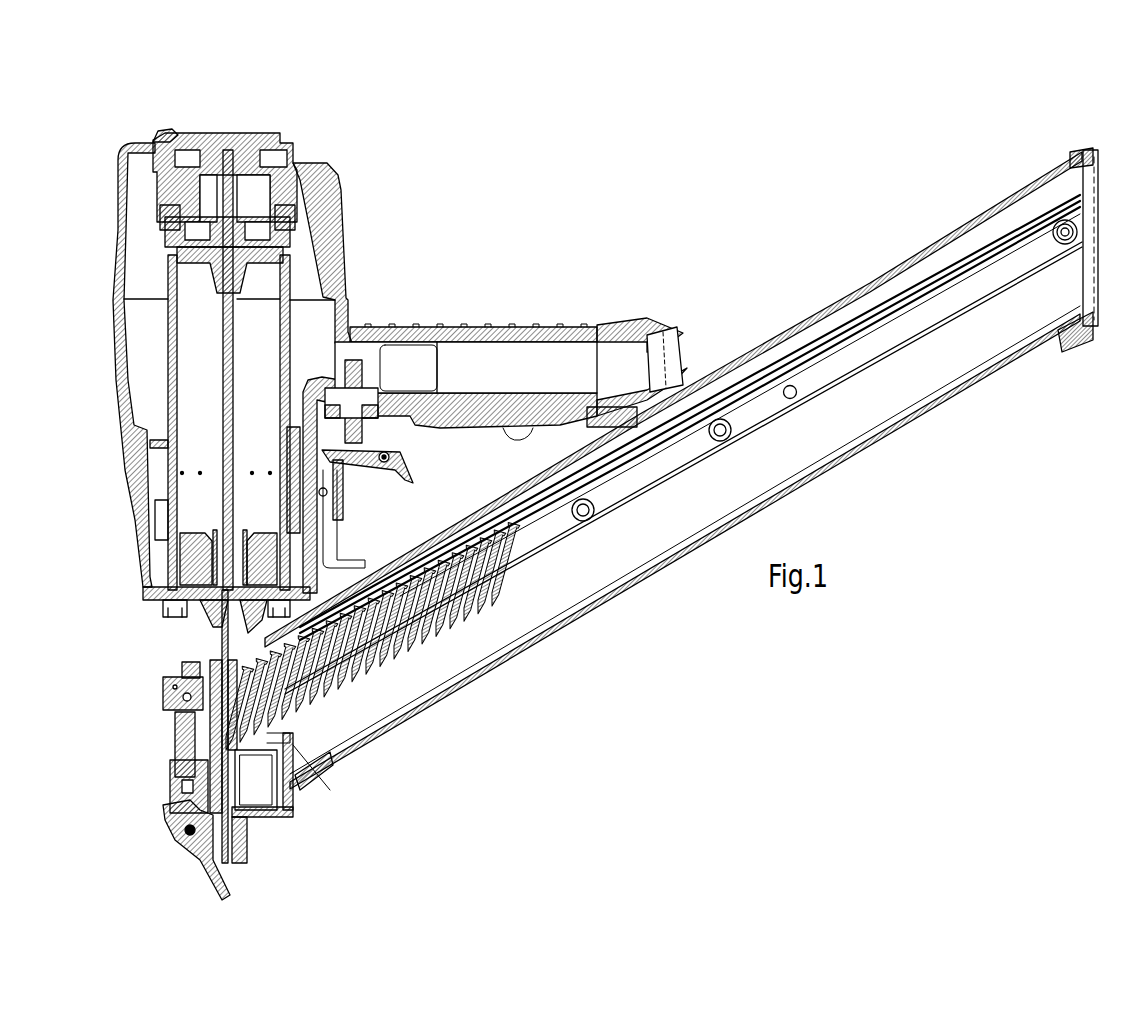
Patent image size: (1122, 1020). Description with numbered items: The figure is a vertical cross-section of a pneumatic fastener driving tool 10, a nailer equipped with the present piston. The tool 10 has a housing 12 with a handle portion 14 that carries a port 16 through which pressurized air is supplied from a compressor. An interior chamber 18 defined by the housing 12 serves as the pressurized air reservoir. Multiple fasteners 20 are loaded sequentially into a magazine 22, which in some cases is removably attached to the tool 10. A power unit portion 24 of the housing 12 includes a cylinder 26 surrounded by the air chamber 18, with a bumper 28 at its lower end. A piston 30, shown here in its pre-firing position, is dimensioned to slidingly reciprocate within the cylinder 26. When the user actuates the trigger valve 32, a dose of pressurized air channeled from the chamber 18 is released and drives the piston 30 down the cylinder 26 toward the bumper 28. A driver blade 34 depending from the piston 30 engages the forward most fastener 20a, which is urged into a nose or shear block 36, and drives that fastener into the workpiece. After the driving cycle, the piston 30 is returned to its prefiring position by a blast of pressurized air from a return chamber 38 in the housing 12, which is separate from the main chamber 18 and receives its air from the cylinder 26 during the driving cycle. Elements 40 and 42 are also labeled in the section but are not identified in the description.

The fastener driving tool 10 is at (480, 243).
The housing 12 is at (348, 318).
The handle portion 14 is at (598, 322).
The port 16 is at (670, 360).
The interior chamber 18 is at (147, 337).
The fasteners 20 is at (393, 652).
The forward most fastener 20a is at (165, 711).
The magazine 22 is at (550, 603).
The power unit portion 24 is at (110, 285).
The cylinder 26 is at (172, 382).
The bumper 28 is at (198, 565).
The piston 30 is at (177, 270).
The trigger valve 32 is at (363, 428).
The driver blade 34 is at (227, 413).
The nose 36 is at (227, 652).
The return chamber 38 is at (155, 462).
The main valve seal 40 is at (277, 262).
The piston head 42 is at (263, 283).